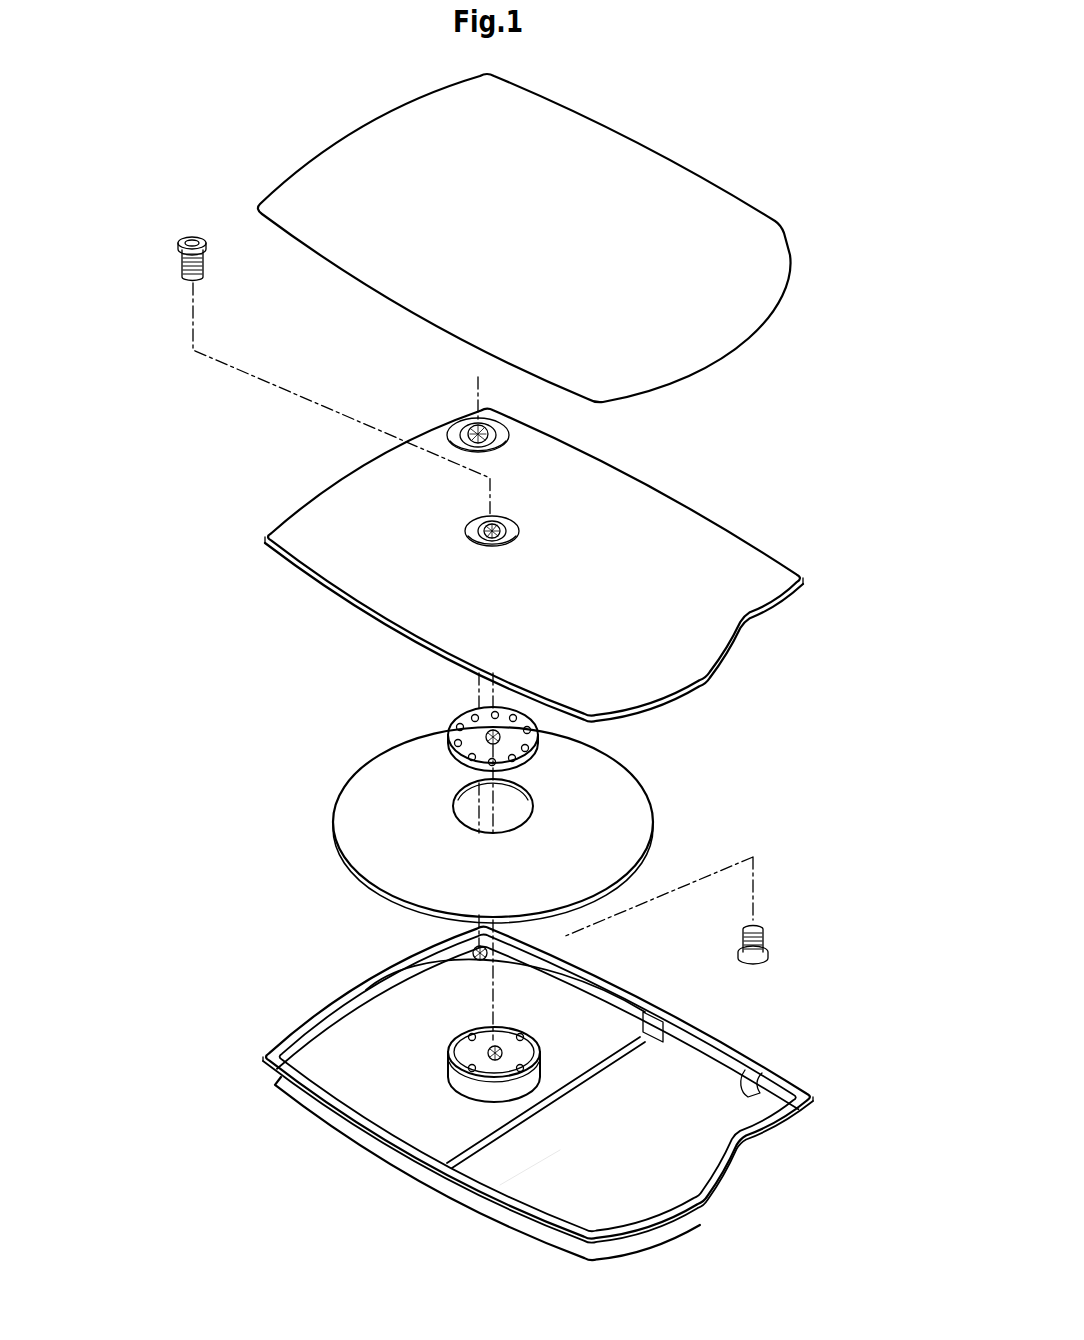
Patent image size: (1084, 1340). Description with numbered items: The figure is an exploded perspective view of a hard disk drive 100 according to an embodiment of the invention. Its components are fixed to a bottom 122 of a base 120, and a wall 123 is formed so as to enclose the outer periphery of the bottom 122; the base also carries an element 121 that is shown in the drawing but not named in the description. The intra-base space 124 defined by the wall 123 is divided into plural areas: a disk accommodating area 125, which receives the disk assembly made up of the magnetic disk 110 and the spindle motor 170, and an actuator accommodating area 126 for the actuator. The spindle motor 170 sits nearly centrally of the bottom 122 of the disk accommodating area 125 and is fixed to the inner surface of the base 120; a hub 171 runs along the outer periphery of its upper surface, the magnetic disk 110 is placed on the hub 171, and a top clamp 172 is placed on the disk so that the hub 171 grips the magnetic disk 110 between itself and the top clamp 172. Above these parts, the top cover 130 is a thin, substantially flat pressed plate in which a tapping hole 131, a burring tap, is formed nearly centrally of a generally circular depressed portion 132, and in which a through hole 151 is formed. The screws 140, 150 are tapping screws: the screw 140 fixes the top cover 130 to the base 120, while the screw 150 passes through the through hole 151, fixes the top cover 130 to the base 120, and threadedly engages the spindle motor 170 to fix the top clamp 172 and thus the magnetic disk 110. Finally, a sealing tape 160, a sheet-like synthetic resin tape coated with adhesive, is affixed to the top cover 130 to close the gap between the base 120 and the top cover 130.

The hard disk drive 100 is at (282, 118).
The magnetic disk 110 is at (633, 790).
The base 120 is at (670, 1237).
The flange portion with screw hole 121 is at (430, 955).
The bottom 122 is at (673, 1158).
The wall 123 is at (777, 1117).
The intra-base space 124 is at (358, 1230).
The disk accommodating area 125 is at (443, 1208).
The actuator accommodating area 126 is at (500, 1177).
The top cover 130 is at (773, 560).
The tapping hole 131 is at (583, 452).
The depressed portion 132 is at (457, 433).
The screw 140 is at (190, 236).
The screw 150 is at (770, 957).
The through hole 151 is at (507, 520).
The sealing tape 160 is at (617, 143).
The spindle motor 170 is at (425, 1044).
The hub 171 is at (447, 1070).
The top clamp 172 is at (450, 730).